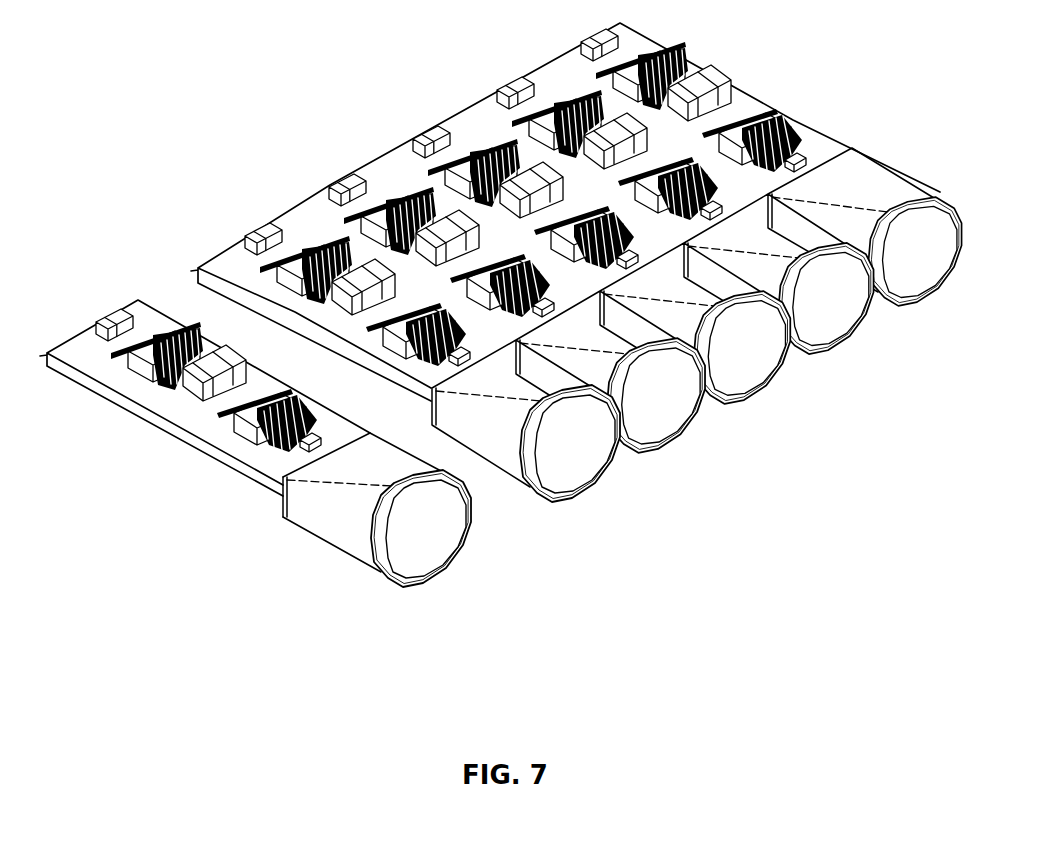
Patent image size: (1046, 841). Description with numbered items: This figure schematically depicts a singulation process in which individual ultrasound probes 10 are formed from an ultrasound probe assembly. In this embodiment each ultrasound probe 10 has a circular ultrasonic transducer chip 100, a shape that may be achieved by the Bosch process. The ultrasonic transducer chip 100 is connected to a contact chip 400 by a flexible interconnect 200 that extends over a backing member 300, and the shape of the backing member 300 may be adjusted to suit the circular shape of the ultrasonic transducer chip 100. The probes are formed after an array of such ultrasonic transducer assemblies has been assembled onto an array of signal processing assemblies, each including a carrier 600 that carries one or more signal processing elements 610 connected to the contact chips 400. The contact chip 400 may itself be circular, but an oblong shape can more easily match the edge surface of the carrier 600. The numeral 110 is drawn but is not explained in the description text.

The ultrasound probe 10 is at (188, 482).
The ultrasonic transducer chip 100 is at (376, 568).
The horn aperture opening 110 is at (408, 520).
The flexible interconnect 200 is at (352, 458).
The backing member 300 is at (327, 517).
The contact chip 400 is at (283, 490).
The carrier 600 is at (145, 322).
The signal processing element 610 is at (138, 368).